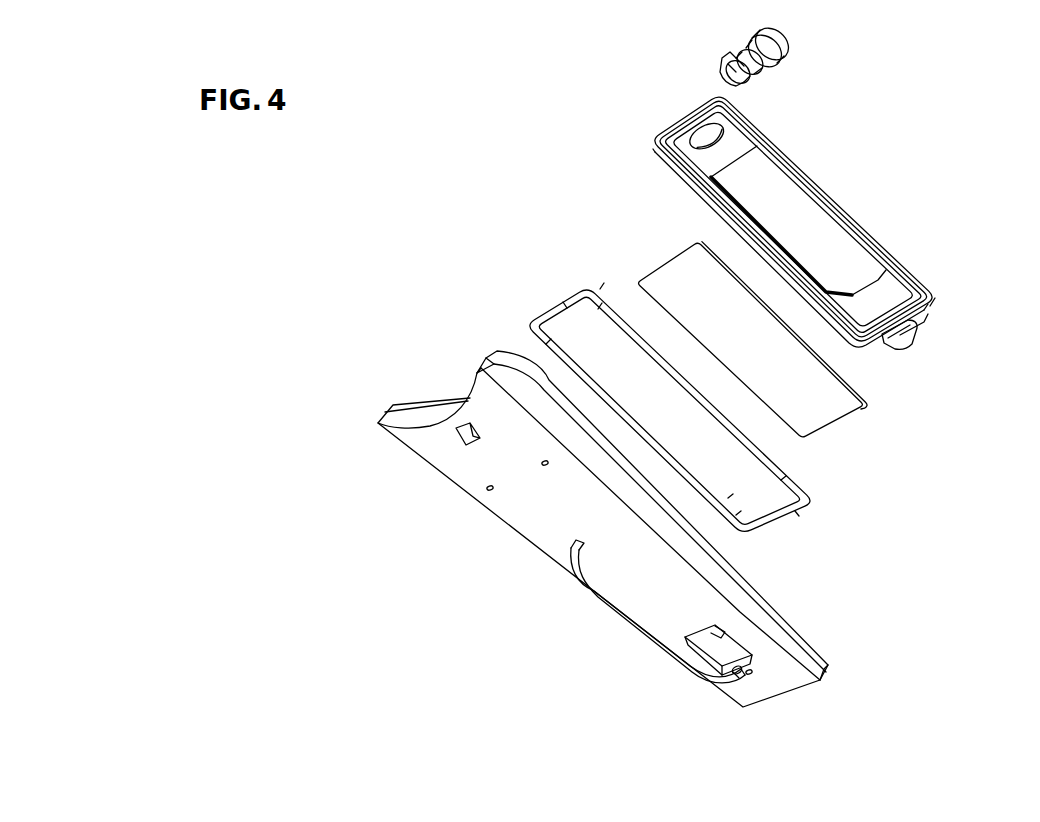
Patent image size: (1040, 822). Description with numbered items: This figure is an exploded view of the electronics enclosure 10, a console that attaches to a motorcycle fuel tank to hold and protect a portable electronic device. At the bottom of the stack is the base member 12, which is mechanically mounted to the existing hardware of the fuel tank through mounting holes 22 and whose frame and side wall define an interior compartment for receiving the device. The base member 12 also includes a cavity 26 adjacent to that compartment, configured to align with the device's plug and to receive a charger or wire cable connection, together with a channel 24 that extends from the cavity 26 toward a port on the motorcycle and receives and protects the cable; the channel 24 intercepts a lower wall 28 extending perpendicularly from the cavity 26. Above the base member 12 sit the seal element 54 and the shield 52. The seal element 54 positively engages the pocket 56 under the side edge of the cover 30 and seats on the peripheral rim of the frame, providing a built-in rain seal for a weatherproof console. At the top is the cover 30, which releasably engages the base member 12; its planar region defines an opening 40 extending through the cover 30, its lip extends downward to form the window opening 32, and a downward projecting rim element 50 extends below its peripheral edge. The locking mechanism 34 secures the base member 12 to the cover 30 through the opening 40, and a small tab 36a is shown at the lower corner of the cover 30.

The electronics enclosure 10 is at (451, 159).
The base member 12 is at (528, 517).
The mounting holes 22 is at (542, 464).
The channel 24 is at (587, 598).
The cavity 26 is at (742, 640).
The lower wall 28 is at (737, 674).
The cover 30 is at (845, 191).
The window opening 32 is at (859, 285).
The locking mechanism 34 is at (797, 45).
The tab 36a is at (911, 338).
The opening 40 is at (714, 134).
The downward projecting rim element 50 is at (680, 178).
The shield 52 is at (866, 410).
The seal element 54 is at (544, 304).
The pocket 56 is at (929, 314).